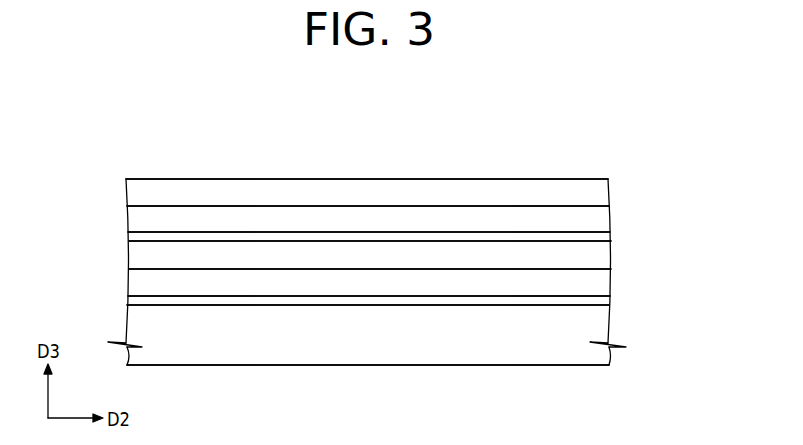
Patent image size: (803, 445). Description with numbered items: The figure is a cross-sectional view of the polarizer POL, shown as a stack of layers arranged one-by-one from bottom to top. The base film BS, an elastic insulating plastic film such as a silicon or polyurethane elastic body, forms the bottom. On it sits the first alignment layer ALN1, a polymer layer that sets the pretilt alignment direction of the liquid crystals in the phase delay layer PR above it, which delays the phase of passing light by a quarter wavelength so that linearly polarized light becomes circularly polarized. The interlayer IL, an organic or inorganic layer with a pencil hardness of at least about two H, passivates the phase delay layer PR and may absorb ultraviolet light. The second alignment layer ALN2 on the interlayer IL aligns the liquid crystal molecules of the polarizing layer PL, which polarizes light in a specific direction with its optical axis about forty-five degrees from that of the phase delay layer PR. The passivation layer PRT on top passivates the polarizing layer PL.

The polarizer POL is at (574, 142).
The passivation layer PRT is at (598, 194).
The polarizing layer PL is at (598, 219).
The second alignment layer ALN2 is at (598, 238).
The interlayer IL is at (598, 257).
The phase delay layer PR is at (598, 280).
The first alignment layer ALN1 is at (598, 301).
The base film BS is at (598, 324).